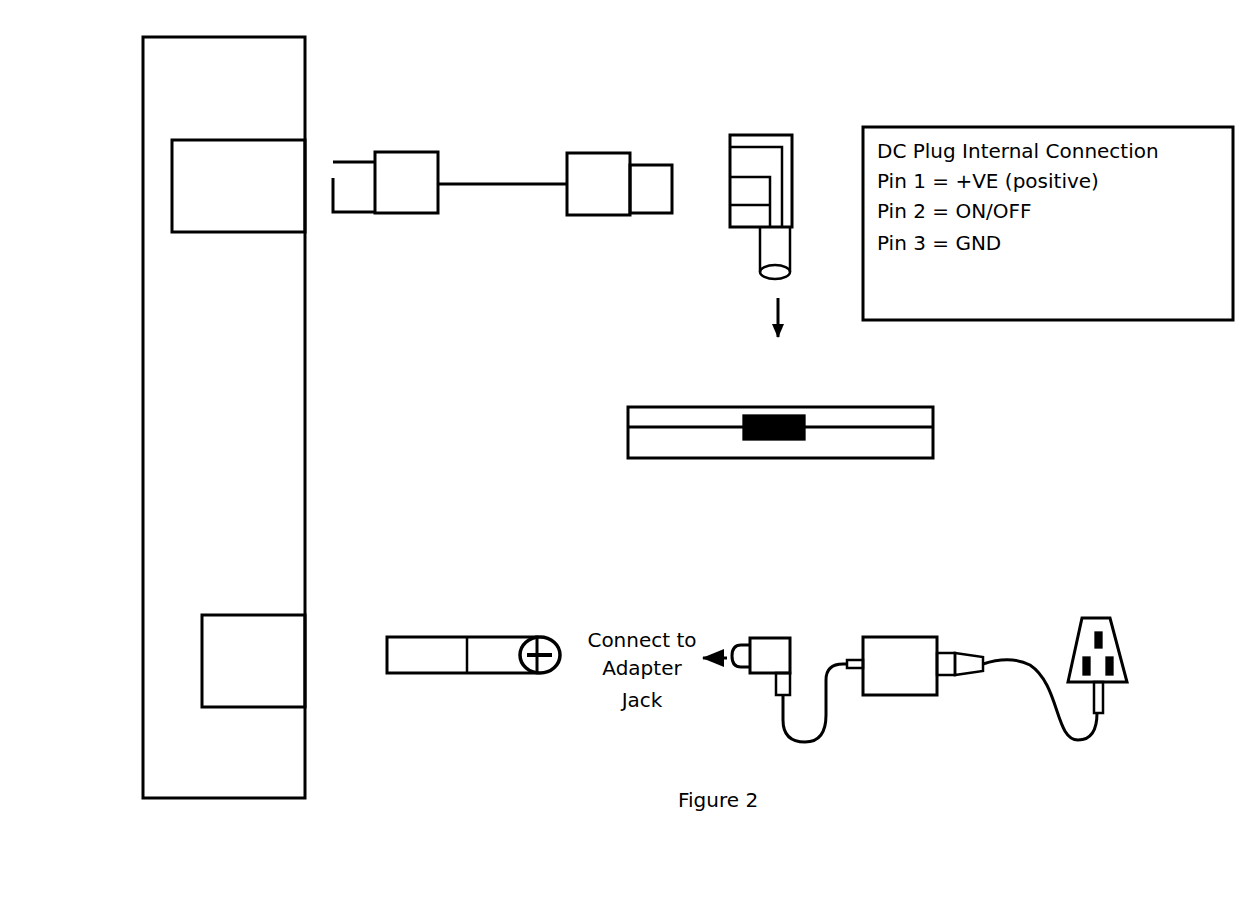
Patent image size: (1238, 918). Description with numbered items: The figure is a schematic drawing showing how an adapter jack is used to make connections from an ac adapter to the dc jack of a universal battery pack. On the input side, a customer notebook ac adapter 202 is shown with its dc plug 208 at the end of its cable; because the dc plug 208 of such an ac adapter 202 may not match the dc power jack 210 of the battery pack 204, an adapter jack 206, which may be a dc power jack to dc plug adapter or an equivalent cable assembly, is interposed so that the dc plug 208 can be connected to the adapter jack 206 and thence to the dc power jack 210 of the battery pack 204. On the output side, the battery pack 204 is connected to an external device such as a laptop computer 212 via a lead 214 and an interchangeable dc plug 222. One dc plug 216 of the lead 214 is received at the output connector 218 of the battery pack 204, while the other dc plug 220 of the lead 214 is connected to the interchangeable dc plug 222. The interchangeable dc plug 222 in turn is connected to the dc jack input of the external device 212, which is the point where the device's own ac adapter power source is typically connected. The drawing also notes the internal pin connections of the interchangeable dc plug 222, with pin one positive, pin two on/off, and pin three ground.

The ac adapter 202 is at (907, 638).
The battery pack 204 is at (273, 475).
The adapter jack 206 is at (482, 632).
The dc plug 208 is at (765, 638).
The dc power jack 210 is at (295, 635).
The laptop computer 212 is at (648, 397).
The lead 214 is at (488, 172).
The dc plug 216 is at (387, 148).
The output connector 218 is at (301, 153).
The dc plug 220 is at (600, 148).
The interchangeable dc plug 222 is at (800, 147).